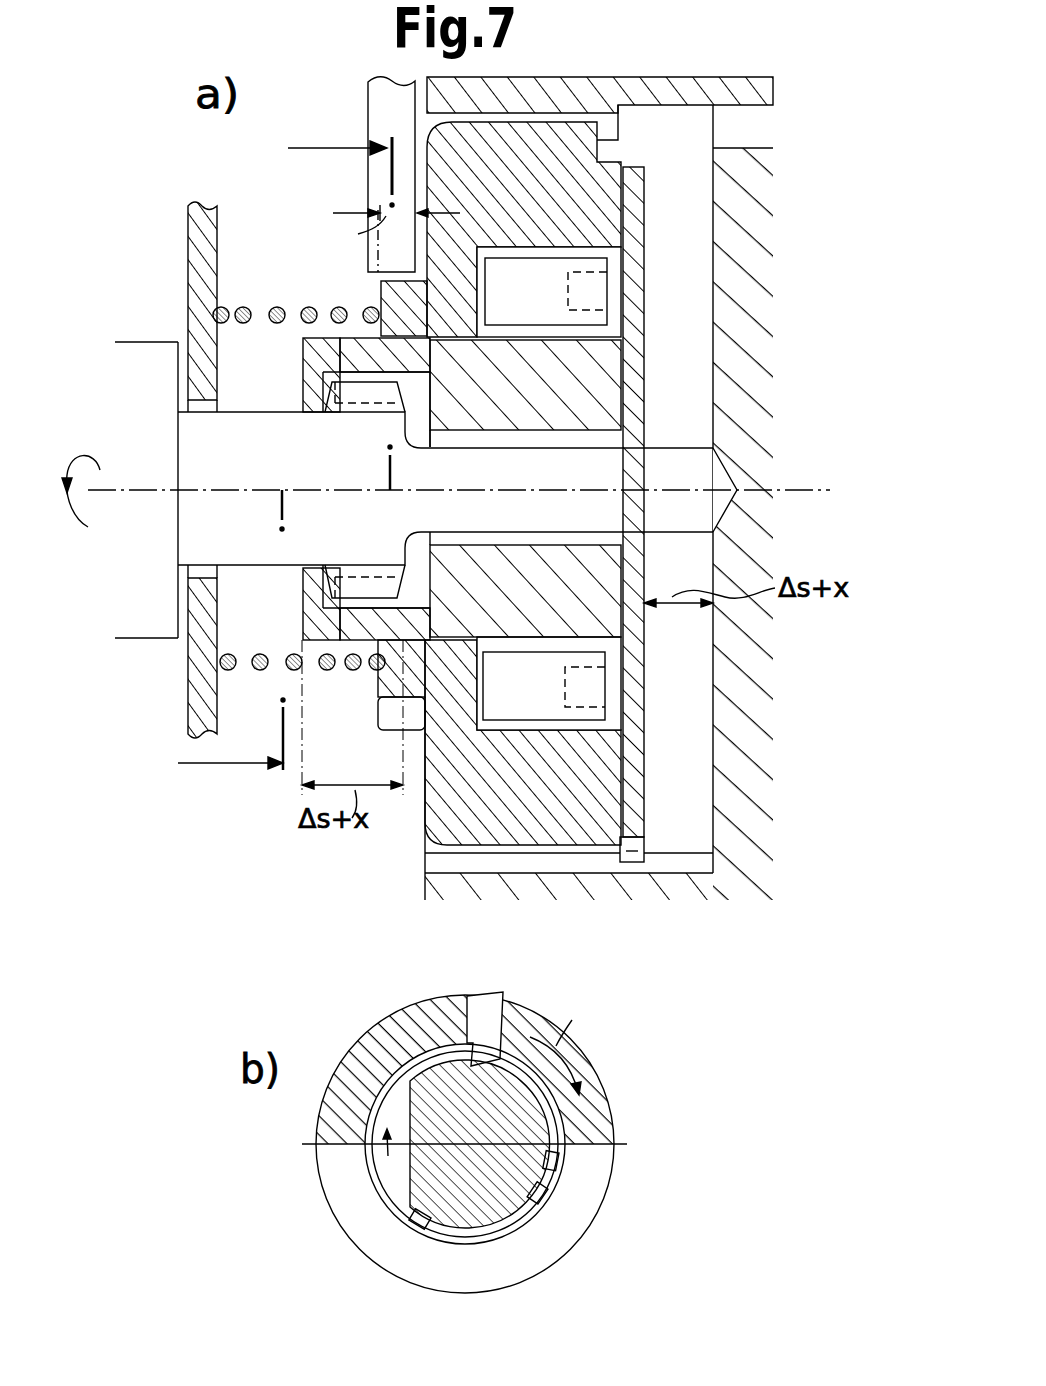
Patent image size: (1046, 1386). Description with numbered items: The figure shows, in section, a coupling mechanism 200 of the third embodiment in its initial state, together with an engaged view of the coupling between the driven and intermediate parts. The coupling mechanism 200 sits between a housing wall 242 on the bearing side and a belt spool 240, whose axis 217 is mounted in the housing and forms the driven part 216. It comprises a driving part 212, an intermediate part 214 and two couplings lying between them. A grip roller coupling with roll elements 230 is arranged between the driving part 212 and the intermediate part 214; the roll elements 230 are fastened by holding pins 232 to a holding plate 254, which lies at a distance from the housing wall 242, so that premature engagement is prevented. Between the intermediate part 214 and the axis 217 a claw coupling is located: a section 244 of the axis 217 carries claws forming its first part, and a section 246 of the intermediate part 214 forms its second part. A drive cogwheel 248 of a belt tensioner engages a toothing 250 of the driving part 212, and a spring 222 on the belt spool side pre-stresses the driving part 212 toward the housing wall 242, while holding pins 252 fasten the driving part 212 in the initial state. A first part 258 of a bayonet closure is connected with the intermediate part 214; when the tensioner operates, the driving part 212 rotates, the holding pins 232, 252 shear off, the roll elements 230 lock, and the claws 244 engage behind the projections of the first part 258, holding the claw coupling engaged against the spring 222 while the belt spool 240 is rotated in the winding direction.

In FIG. 7a, the coupling mechanism 200 is at (780, 641).
In FIG. 7a, the driving part 212 is at (425, 835).
In FIG. 7a, the intermediate part 214 is at (585, 396).
In FIG. 7b, the intermediate part 214 is at (372, 1050).
In FIG. 7a, the driven part 216 is at (195, 438).
In FIG. 7b, the driven part 216 is at (510, 1124).
In FIG. 7a, the axis of the belt spool 217 is at (800, 488).
In FIG. 7a, the spring 222 is at (256, 688).
In FIG. 7a, the roll elements 230 is at (553, 712).
In FIG. 7a, the holding pins 232 is at (613, 288).
In FIG. 7a, the belt spool 240 is at (136, 600).
In FIG. 7a, the housing wall 242 is at (737, 856).
In FIG. 7a, the claws 244 is at (335, 577).
In FIG. 7b, the claws 244 is at (492, 1062).
In FIG. 7a, the section of the intermediate part 246 is at (357, 346).
In FIG. 7b, the section of the intermediate part 246 is at (428, 1073).
In FIG. 7a, the drive cogwheel 248 is at (370, 181).
In FIG. 7a, the toothing 250 is at (392, 283).
In FIG. 7a, the holding pins 252 is at (607, 132).
In FIG. 7a, the holding plate 254 is at (630, 796).
In FIG. 7a, the first part of the bayonet closure 258 is at (306, 362).
In FIG. 7b, the first part of the bayonet closure 258 is at (405, 1204).